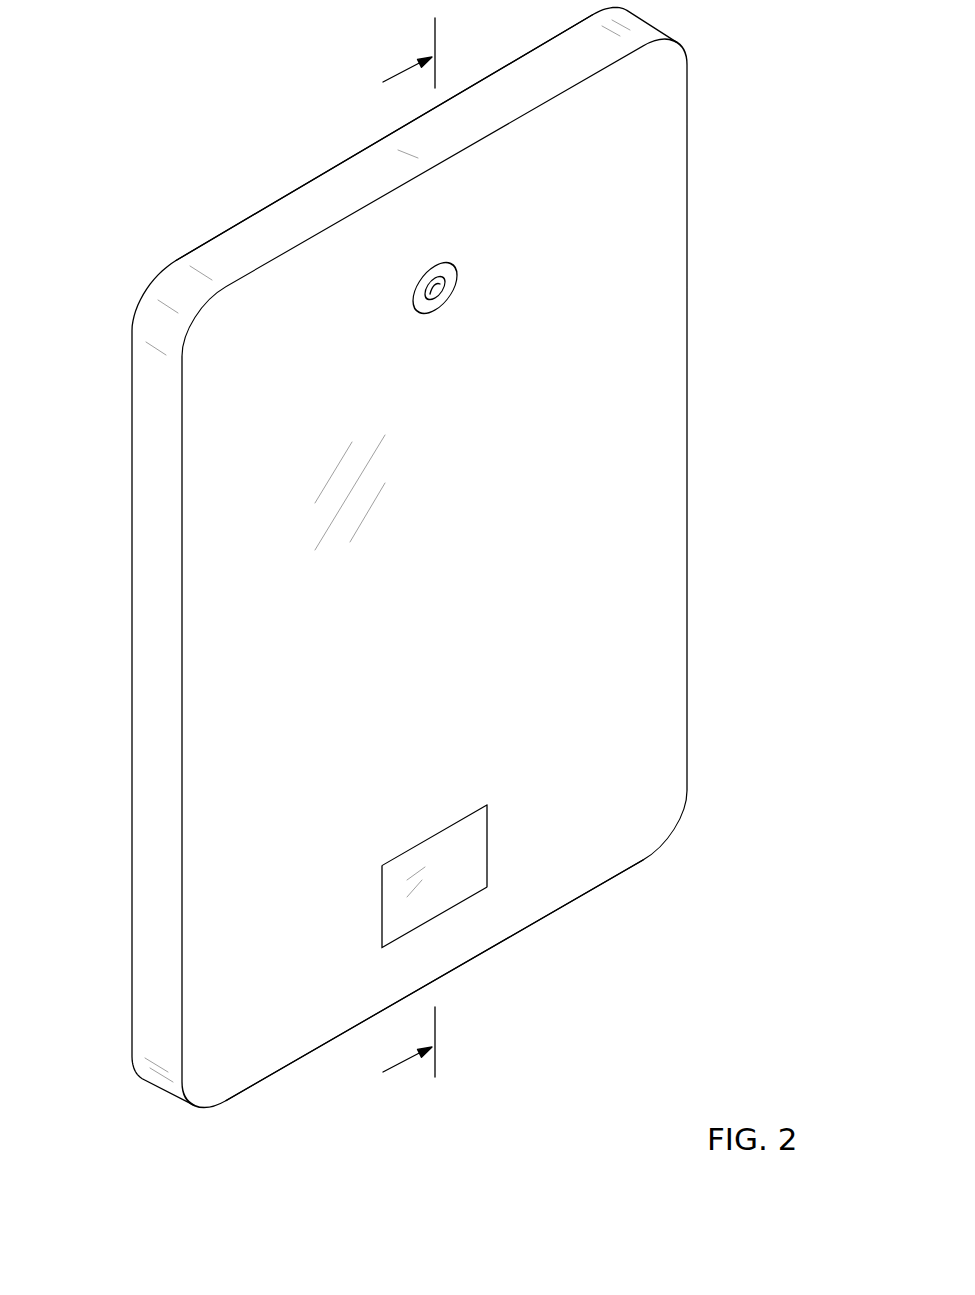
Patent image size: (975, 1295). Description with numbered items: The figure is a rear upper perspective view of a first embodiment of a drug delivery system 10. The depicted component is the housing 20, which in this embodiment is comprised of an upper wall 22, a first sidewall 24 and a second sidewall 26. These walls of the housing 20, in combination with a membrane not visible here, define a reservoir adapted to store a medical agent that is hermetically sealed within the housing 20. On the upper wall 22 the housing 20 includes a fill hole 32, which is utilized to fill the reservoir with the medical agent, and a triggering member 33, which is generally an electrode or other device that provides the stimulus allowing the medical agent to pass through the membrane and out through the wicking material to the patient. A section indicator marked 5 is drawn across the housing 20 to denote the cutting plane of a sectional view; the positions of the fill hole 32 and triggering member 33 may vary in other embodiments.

The drug delivery system 10 is at (414, 566).
The housing 20 is at (466, 566).
The upper wall 22 is at (597, 493).
The first sidewall 24 is at (313, 208).
The second sidewall 26 is at (590, 893).
The fill hole 32 is at (435, 290).
The triggering member 33 is at (455, 866).
The section line 5- 5 is at (396, 559).